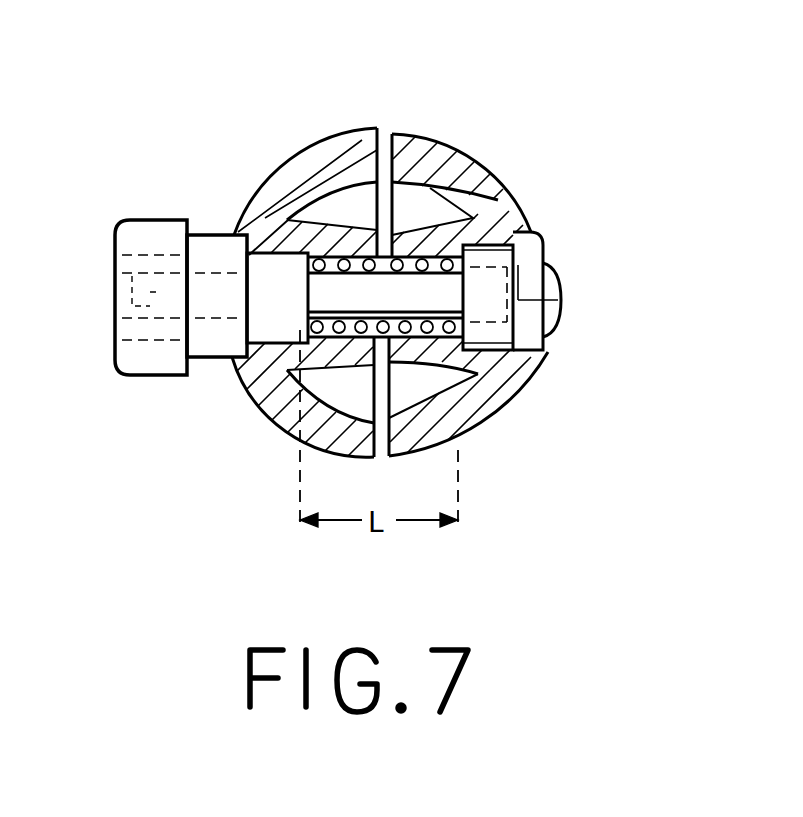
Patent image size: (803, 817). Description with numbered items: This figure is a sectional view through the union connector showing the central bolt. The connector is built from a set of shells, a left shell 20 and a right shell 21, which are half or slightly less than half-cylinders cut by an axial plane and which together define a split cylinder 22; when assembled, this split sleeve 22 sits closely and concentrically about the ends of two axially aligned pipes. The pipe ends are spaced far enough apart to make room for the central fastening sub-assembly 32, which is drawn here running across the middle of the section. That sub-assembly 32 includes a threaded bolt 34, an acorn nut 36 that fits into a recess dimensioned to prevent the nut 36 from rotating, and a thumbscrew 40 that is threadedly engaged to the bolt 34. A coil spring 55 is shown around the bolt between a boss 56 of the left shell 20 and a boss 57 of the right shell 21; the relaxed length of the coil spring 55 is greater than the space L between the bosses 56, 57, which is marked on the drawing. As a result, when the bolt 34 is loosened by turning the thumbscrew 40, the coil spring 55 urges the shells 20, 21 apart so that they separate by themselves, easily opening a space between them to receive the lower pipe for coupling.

The split cylinder 22 is at (549, 80).
The left shell 20 is at (272, 196).
The right shell 21 is at (498, 196).
The thumbscrew 40 is at (143, 237).
The central fastening sub-assembly 32 is at (227, 393).
The threaded bolt 34 is at (362, 292).
The acorn nut 36 is at (548, 277).
The coil spring 55 is at (428, 337).
The boss 56 is at (330, 237).
The boss 57 is at (443, 246).